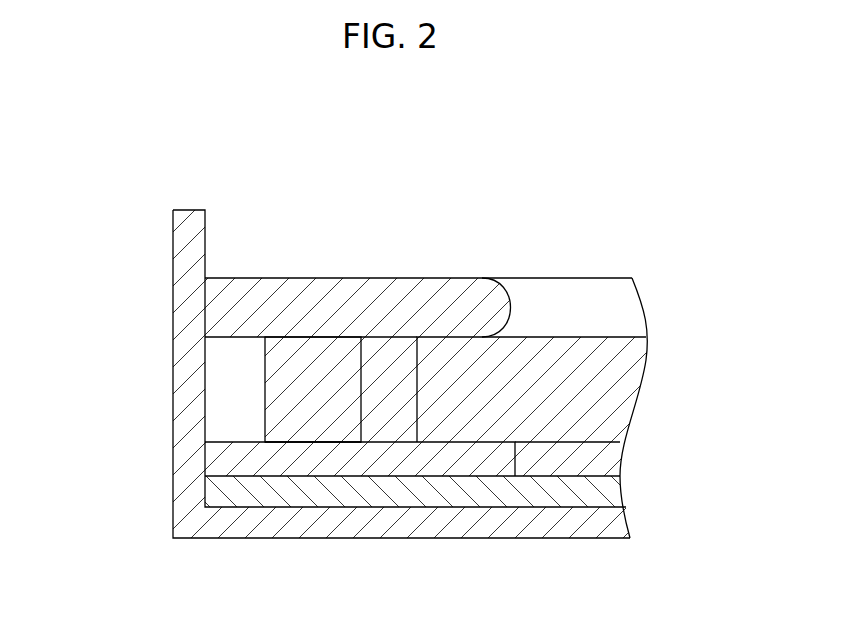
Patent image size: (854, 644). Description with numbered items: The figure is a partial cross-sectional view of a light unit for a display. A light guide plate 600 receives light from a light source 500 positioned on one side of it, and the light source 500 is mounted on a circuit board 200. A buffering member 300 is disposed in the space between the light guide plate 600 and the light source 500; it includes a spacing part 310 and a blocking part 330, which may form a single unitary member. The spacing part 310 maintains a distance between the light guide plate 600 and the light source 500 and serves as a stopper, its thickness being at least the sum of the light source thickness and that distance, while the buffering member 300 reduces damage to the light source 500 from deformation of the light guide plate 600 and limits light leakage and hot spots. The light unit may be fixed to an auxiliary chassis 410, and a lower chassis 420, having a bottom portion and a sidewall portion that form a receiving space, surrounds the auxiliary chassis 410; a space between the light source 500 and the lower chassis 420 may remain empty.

The circuit board 200 is at (461, 460).
The buffering member 300 is at (342, 360).
The spacing part 310 is at (378, 370).
The blocking part 330 is at (307, 313).
The auxiliary chassis 410 is at (590, 477).
The lower chassis 420 is at (232, 523).
The light source 500 is at (318, 425).
The light guide plate 600 is at (583, 384).